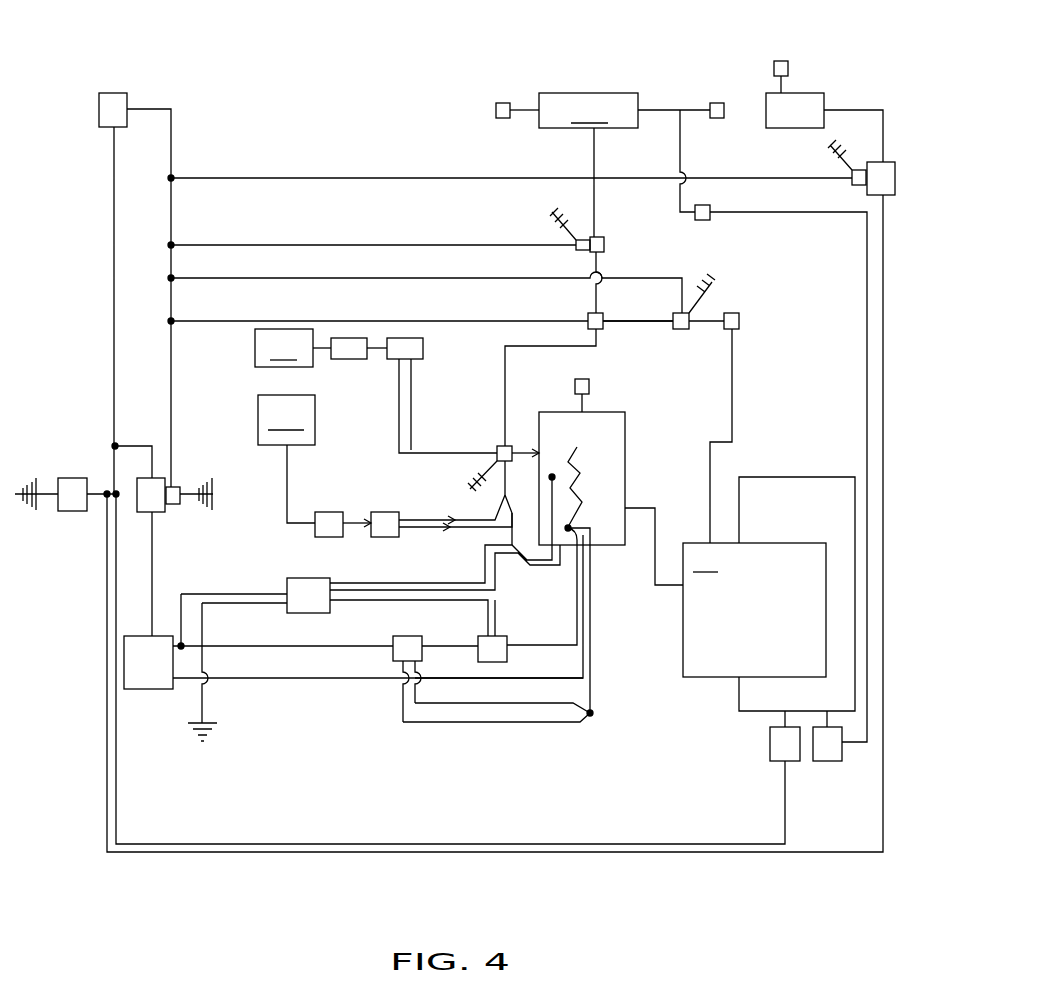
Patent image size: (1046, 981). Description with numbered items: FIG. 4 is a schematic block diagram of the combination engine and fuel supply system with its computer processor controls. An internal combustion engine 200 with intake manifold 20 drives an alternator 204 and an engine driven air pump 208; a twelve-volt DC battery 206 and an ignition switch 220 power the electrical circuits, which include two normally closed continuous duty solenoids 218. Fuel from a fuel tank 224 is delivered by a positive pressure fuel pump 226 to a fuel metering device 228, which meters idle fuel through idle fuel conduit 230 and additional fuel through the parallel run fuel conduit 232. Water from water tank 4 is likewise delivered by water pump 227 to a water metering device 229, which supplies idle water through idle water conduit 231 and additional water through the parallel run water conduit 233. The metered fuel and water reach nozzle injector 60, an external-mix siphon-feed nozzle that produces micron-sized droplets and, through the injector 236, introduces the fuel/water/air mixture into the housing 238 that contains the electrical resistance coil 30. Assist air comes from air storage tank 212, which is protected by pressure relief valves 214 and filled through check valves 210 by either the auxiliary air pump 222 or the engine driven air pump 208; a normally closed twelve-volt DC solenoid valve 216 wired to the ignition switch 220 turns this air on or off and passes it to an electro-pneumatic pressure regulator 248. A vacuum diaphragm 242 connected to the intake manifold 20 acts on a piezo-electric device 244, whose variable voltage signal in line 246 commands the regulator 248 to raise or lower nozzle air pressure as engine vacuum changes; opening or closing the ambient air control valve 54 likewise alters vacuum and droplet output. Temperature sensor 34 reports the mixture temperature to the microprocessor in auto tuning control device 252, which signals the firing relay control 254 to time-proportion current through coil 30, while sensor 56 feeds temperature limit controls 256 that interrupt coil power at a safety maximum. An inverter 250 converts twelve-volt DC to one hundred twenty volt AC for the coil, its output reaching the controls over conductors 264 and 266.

The water tank 4 is at (293, 348).
The intake manifold 20 is at (754, 610).
The electrical resistance coil 30 is at (584, 468).
The temperature sensor 34 is at (540, 532).
The ambient air control valve 54 is at (590, 387).
The temperature safety sensor 56 is at (593, 637).
The nozzle injector 60 is at (497, 452).
The internal combustion engine 200 is at (797, 594).
The engine driven alternator 204 is at (775, 750).
The 12 v DC battery 206 is at (75, 508).
The engine driven air pump 208 is at (835, 753).
The check valves 210 is at (712, 103).
The air storage tank 212 is at (588, 110).
The pressure relief valve 214 is at (495, 110).
The 12 v DC solenoid valve 216 is at (605, 245).
The 12 v DC continuous duty solenoid 218 is at (887, 165).
The ignition switch 220 is at (112, 100).
The auxiliary air pump 222 is at (795, 110).
The memory 224 is at (286, 459).
The fuel pump 226 is at (328, 518).
The water pump 227 is at (365, 359).
The fuel metering device 228 is at (385, 518).
The water metering device 229 is at (423, 352).
The idle fuel conduit 230 is at (453, 518).
The idle water conduit 231 is at (399, 417).
The run fuel conduit 232 is at (480, 530).
The run water conduit 233 is at (411, 408).
The injector 236 is at (504, 476).
The heating device 238 is at (615, 420).
The vacuum diaphragm 242 is at (740, 316).
The piezo-electric device 244 is at (675, 313).
The signal line 246 is at (637, 320).
The electro-pneumatic pressure regulator 248 is at (588, 318).
The inverter 250 is at (154, 641).
The auto tuning control device 252 is at (370, 556).
The firing relay control 254 is at (497, 650).
The temperature limit control 256 is at (393, 640).
The line 264 is at (368, 648).
The line 266 is at (393, 682).